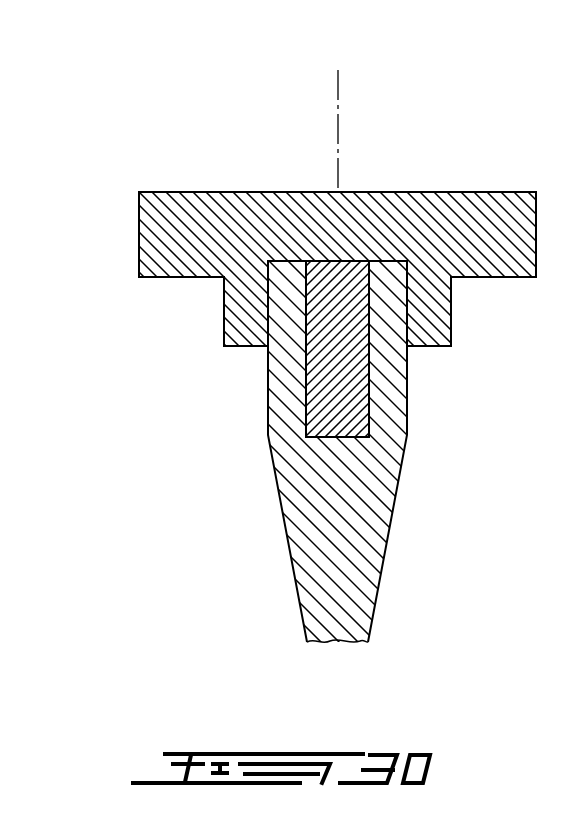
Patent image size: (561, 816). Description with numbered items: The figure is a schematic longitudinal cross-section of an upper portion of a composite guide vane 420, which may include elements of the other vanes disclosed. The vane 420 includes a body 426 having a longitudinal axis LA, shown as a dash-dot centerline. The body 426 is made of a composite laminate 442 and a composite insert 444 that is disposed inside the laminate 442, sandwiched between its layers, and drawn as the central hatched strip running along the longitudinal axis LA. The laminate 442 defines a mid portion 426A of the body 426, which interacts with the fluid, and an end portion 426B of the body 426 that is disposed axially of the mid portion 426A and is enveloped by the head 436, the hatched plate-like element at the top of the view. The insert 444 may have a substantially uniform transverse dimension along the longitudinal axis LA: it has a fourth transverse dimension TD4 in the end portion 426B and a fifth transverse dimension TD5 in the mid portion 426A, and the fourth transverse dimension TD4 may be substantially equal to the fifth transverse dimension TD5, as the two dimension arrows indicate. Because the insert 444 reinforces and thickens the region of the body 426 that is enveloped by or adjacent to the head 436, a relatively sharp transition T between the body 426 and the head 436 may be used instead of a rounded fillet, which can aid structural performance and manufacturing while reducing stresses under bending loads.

The vane 420 is at (231, 122).
The longitudinal axis LA is at (338, 91).
The head 436 is at (170, 205).
The body 426 is at (280, 425).
The mid portion 426A is at (73, 500).
The end portion 426B is at (224, 345).
The laminate 442 is at (333, 462).
The insert 444 is at (339, 377).
The fourth transverse dimension TD4 is at (207, 309).
The fifth transverse dimension TD5 is at (207, 427).
The transition T is at (408, 347).